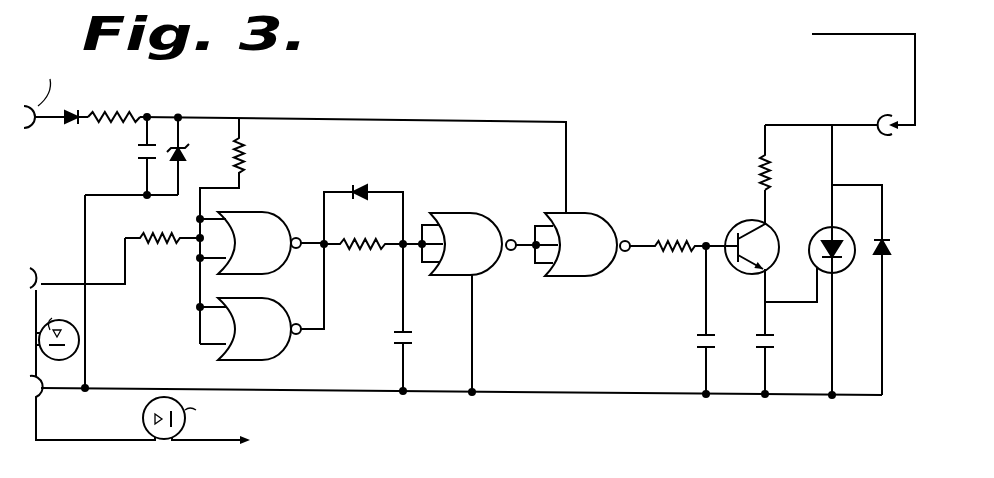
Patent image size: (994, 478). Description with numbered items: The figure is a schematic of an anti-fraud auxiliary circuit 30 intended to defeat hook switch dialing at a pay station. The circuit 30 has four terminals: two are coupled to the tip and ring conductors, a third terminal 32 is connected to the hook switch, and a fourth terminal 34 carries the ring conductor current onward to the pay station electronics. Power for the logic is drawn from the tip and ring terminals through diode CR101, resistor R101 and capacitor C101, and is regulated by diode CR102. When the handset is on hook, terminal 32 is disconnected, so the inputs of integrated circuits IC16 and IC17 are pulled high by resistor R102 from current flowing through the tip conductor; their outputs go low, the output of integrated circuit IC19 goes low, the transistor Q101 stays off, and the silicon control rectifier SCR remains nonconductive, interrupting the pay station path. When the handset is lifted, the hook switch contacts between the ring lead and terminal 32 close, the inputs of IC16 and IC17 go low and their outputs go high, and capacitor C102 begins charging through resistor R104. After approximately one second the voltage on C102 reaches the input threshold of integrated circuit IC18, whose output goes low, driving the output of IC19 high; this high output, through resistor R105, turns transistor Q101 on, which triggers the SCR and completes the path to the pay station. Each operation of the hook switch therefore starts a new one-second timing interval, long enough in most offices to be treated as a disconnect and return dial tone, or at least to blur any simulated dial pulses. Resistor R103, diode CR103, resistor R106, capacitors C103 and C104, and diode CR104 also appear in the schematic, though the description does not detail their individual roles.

The anti-fraud auxiliary circuit 30 is at (624, 73).
The third terminal 32 is at (64, 282).
The fourth terminal 34 is at (880, 116).
The diode CR101 is at (70, 108).
The resistor R101 is at (130, 112).
The capacitor C101 is at (140, 160).
The diode CR102 is at (188, 152).
The resistor R102 is at (252, 165).
The resistor R103 is at (148, 252).
The diode CR103 is at (366, 192).
The resistor R104 is at (343, 250).
The capacitor C102 is at (398, 345).
The integrated circuit IC16 is at (262, 243).
The integrated circuit IC17 is at (262, 302).
The integrated circuit IC18 is at (490, 302).
The integrated circuit IC19 is at (582, 244).
The resistor R105 is at (656, 242).
The transistor Q101 is at (748, 275).
The resistor R106 is at (760, 157).
The capacitor C103 is at (702, 348).
The capacitor C104 is at (768, 348).
The silicon control rectifier SCR is at (842, 274).
The diode CR104 is at (884, 255).